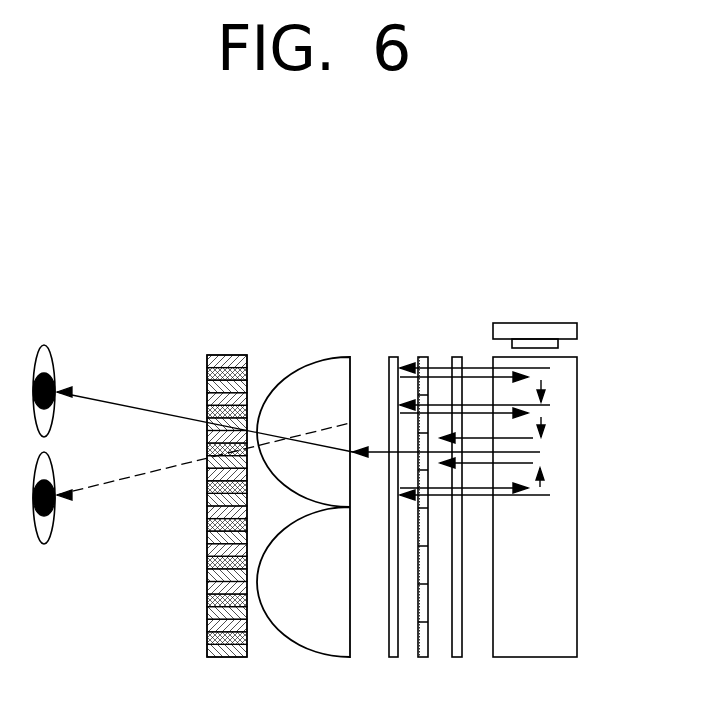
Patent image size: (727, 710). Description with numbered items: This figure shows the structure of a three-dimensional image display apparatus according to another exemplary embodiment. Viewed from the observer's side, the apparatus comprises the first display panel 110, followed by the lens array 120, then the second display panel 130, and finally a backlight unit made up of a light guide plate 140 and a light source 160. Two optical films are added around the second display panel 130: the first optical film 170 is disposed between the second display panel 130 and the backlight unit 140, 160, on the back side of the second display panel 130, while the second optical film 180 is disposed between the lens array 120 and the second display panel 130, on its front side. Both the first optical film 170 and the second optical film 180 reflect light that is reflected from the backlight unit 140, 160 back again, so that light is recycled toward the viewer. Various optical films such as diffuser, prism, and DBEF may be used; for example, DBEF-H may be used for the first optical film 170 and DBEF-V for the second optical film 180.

The first display panel 110 is at (226, 355).
The lens array 120 is at (318, 358).
The second display panel 130 is at (423, 357).
The light guide plate 140 is at (575, 423).
The light source 160 is at (577, 330).
The first optical film 170 is at (456, 356).
The second optical film 180 is at (393, 356).